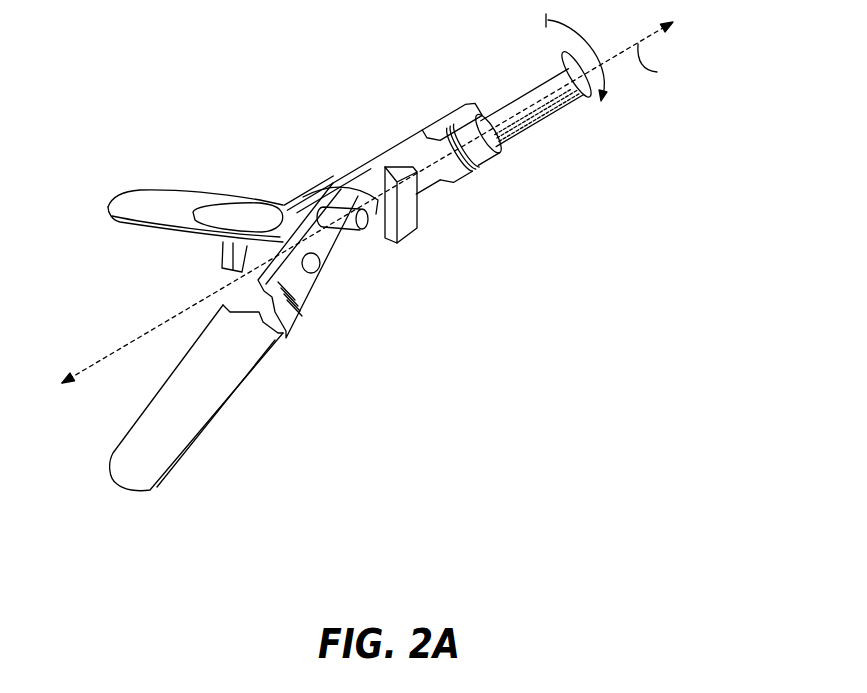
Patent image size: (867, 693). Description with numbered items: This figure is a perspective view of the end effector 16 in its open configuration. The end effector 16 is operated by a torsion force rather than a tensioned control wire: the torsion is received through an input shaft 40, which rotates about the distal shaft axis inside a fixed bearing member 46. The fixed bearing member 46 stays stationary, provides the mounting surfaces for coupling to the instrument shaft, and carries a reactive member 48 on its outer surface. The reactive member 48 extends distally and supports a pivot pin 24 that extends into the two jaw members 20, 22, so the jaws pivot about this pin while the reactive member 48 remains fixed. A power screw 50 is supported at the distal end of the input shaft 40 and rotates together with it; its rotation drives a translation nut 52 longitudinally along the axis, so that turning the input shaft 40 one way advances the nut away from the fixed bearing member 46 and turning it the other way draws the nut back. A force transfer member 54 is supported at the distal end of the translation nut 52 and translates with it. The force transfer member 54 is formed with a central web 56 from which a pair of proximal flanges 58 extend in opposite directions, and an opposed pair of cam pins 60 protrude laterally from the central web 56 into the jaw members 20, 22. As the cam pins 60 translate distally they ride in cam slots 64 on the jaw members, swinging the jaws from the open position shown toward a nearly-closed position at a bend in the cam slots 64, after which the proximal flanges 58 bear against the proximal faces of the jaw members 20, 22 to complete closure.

The end effector 16 is at (158, 80).
The jaw member 20 is at (140, 200).
The jaw member 22 is at (152, 492).
The pivot pin 24 is at (313, 268).
The input shaft 40 is at (547, 85).
The fixed bearing member 46 is at (497, 146).
The reactive member 48 is at (457, 112).
The power screw 50 is at (481, 171).
The translation nut 52 is at (442, 194).
The force transfer member 54 is at (380, 158).
The central web 56 is at (367, 180).
The proximal flanges 58 is at (405, 214).
The cam pins 60 is at (357, 223).
The cam slots 64 is at (338, 228).